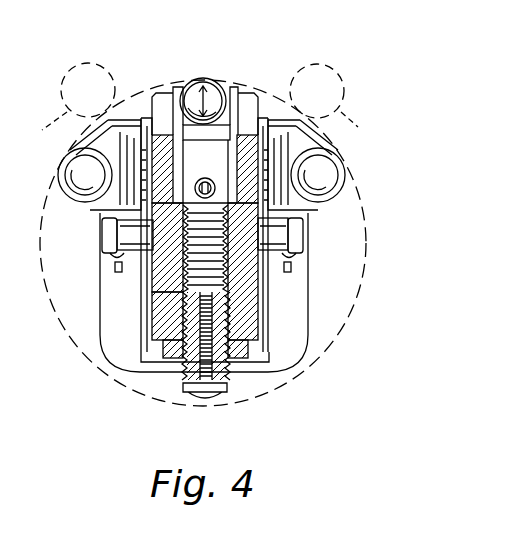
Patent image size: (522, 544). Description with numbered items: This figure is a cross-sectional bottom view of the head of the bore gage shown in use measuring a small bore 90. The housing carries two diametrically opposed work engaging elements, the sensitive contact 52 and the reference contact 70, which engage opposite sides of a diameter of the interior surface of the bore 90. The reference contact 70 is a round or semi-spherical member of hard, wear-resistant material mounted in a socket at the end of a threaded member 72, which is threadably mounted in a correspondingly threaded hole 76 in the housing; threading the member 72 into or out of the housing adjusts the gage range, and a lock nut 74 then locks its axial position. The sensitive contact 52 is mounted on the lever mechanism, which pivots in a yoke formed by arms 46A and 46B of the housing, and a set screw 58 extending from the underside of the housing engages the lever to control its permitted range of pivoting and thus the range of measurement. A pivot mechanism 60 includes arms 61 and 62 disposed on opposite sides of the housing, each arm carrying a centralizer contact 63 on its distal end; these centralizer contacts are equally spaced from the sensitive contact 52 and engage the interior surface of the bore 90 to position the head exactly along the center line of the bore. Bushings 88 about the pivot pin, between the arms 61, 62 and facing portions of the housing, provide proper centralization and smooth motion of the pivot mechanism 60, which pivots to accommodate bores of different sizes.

The arm of yoke 46A is at (165, 97).
The arm of yoke 46B is at (243, 97).
The sensitive contact 52 is at (207, 78).
The bushings 88 is at (147, 118).
The centralizer contact 63 is at (65, 163).
The arm of pivot mechanism 62 is at (90, 212).
The arm of pivot mechanism 61 is at (340, 211).
The set screw 58 is at (212, 195).
The threaded hole 76 is at (225, 270).
The bore 90 is at (373, 298).
The pivot mechanism 60 is at (318, 327).
The threaded member 72 is at (183, 305).
The lock nut 74 is at (175, 358).
The reference contact 70 is at (207, 403).